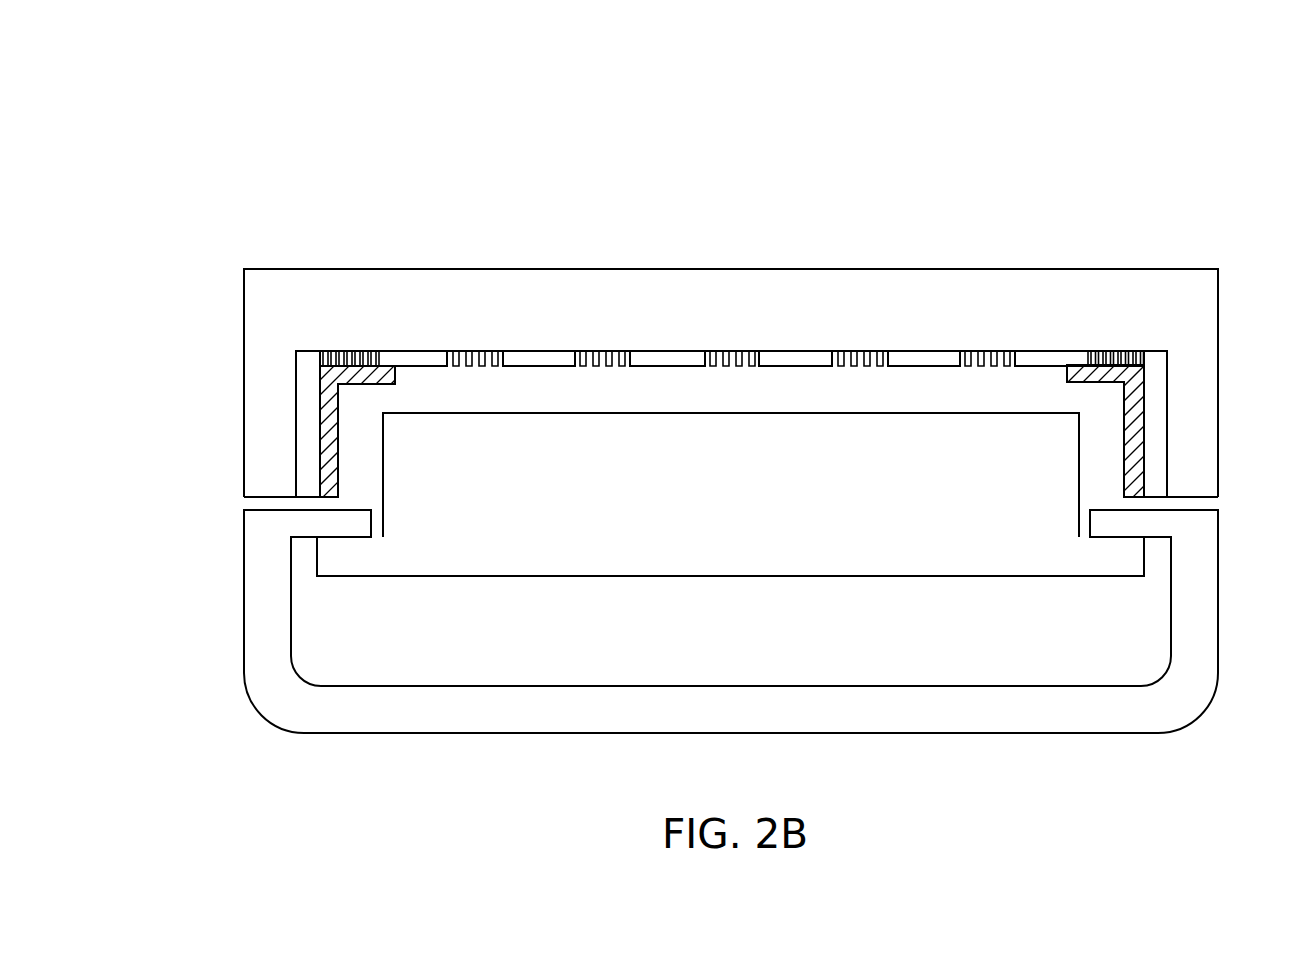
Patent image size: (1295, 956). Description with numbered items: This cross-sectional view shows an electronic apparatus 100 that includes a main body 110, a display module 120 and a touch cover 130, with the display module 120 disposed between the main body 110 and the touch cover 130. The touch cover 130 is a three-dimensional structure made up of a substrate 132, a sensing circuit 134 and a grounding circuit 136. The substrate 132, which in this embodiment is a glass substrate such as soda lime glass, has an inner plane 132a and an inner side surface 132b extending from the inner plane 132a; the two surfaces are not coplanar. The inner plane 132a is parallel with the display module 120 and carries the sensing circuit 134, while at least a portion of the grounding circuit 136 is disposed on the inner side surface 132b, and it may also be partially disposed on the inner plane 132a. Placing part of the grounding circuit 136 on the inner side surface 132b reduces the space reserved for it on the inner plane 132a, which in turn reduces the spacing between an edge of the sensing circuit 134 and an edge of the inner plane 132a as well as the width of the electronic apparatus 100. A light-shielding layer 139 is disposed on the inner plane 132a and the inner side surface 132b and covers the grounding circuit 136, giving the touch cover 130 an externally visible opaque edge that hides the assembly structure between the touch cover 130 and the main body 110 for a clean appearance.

The electronic apparatus 100 is at (1159, 234).
The main body 110 is at (1203, 585).
The display module 120 is at (878, 507).
The touch cover 130 is at (169, 70).
The substrate 132 is at (681, 296).
The inner plane 132a is at (436, 363).
The inner side surface 132b is at (309, 384).
The sensing circuit 134 is at (585, 353).
The grounding circuit 136 is at (1156, 411).
The light-shielding layer 139 is at (1137, 458).